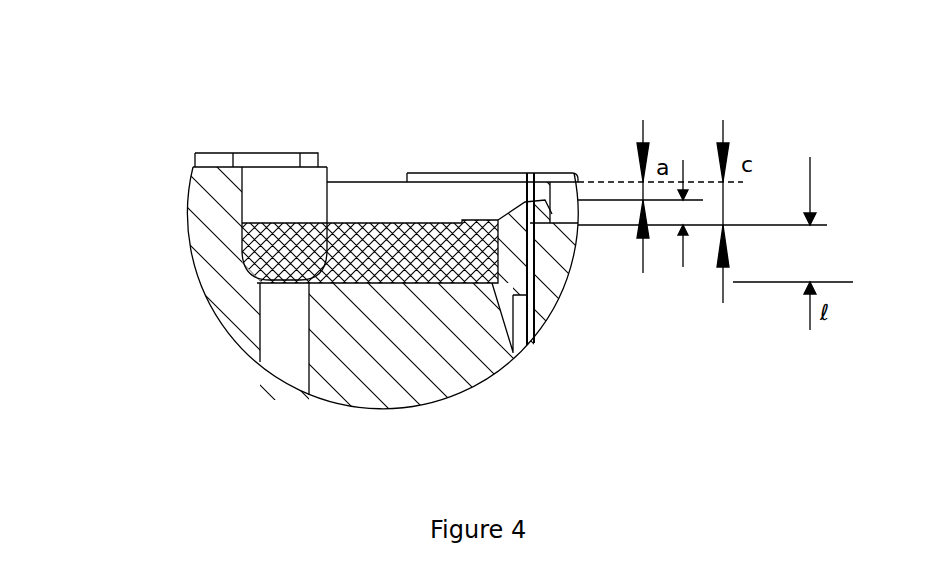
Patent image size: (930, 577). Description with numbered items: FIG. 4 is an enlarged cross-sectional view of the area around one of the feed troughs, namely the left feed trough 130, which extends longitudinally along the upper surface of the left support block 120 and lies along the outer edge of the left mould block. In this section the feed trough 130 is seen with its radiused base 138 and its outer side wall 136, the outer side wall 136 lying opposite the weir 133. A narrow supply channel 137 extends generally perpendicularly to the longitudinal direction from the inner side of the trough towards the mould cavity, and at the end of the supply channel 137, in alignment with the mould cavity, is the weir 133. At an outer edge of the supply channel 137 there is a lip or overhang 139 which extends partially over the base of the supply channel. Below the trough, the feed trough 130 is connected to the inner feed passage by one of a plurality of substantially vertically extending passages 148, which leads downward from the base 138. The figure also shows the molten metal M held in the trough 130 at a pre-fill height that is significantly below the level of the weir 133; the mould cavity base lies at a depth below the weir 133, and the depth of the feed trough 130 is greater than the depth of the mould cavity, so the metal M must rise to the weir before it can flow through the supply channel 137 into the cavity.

The left support block 120 is at (563, 207).
The left feed trough 130 is at (378, 215).
The weir 133 is at (522, 203).
The outer side wall 136 is at (240, 203).
The supply channel 137 is at (493, 203).
The base 138 is at (262, 318).
The lip or overhang 139 is at (514, 352).
The vertically extending passage 148 is at (278, 345).
The molten metal M is at (258, 273).